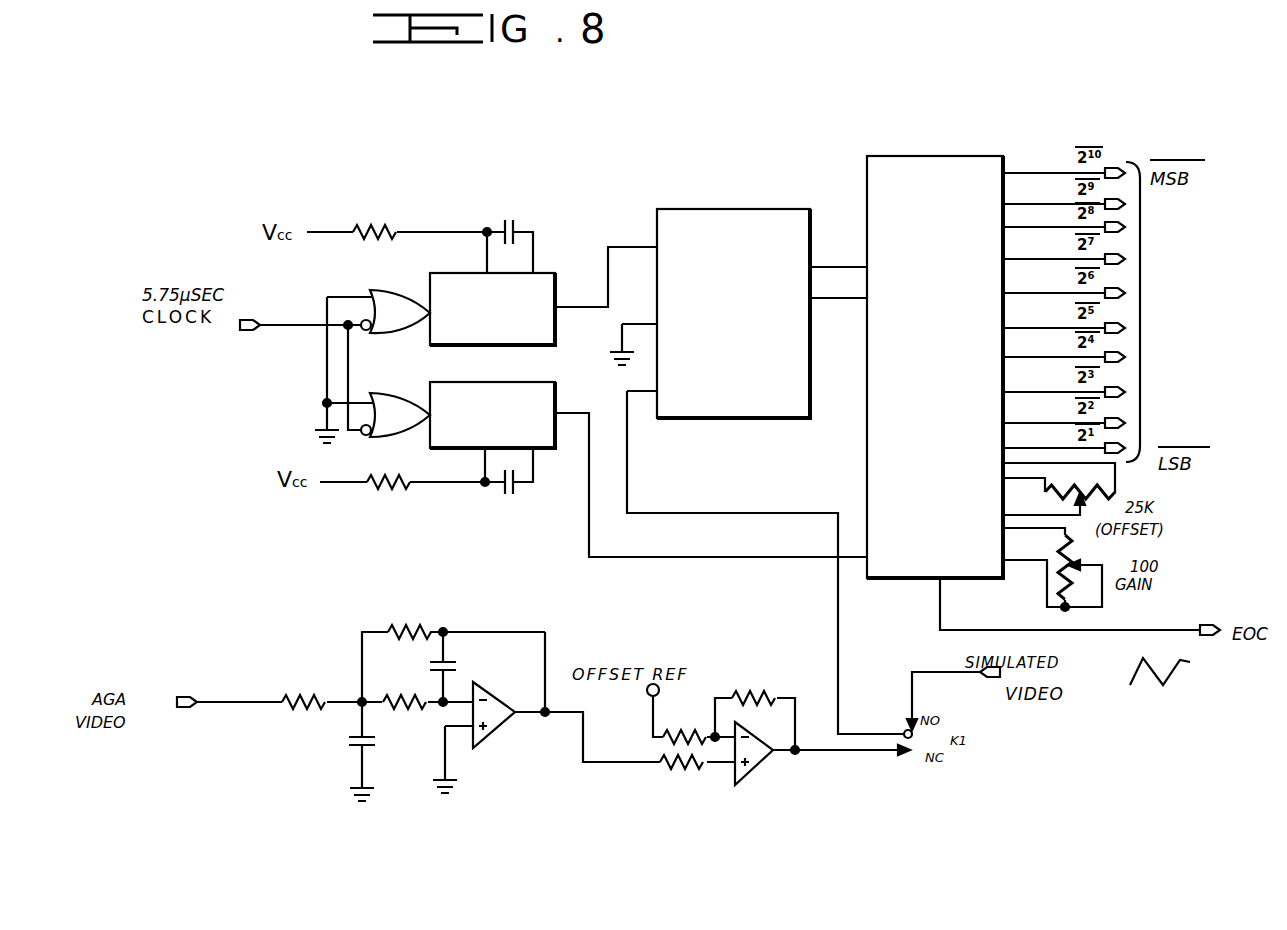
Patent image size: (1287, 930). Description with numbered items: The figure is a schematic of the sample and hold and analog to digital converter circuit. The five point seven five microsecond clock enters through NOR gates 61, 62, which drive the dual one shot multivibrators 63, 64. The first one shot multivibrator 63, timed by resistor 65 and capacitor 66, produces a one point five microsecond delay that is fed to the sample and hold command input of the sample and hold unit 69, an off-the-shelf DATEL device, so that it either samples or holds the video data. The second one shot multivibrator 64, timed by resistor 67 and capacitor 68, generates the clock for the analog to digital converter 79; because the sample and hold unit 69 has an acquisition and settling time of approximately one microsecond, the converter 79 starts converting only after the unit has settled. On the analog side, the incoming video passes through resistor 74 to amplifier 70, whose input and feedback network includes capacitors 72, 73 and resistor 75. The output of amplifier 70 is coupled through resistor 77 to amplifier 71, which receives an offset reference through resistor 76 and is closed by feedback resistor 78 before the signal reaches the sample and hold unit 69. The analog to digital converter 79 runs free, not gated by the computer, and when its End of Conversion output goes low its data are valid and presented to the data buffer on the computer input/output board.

The NOR gate 61 is at (400, 263).
The NOR gate 62 is at (410, 368).
The one shot multivibrator 63 is at (556, 287).
The one shot multivibrator 64 is at (556, 395).
The resistor 65 is at (373, 224).
The capacitor 66 is at (520, 192).
The resistor 67 is at (386, 490).
The capacitor 68 is at (510, 496).
The sample and hold unit 69 is at (697, 209).
The amplifier 70 is at (490, 736).
The amplifier 71 is at (758, 770).
The capacitor 72 is at (341, 743).
The capacitor 73 is at (461, 667).
The resistor 74 is at (298, 693).
The resistor 75 is at (416, 627).
The resistor 76 is at (699, 718).
The resistor 77 is at (688, 770).
The resistor 78 is at (804, 681).
The analog to digital converter 79 is at (907, 156).